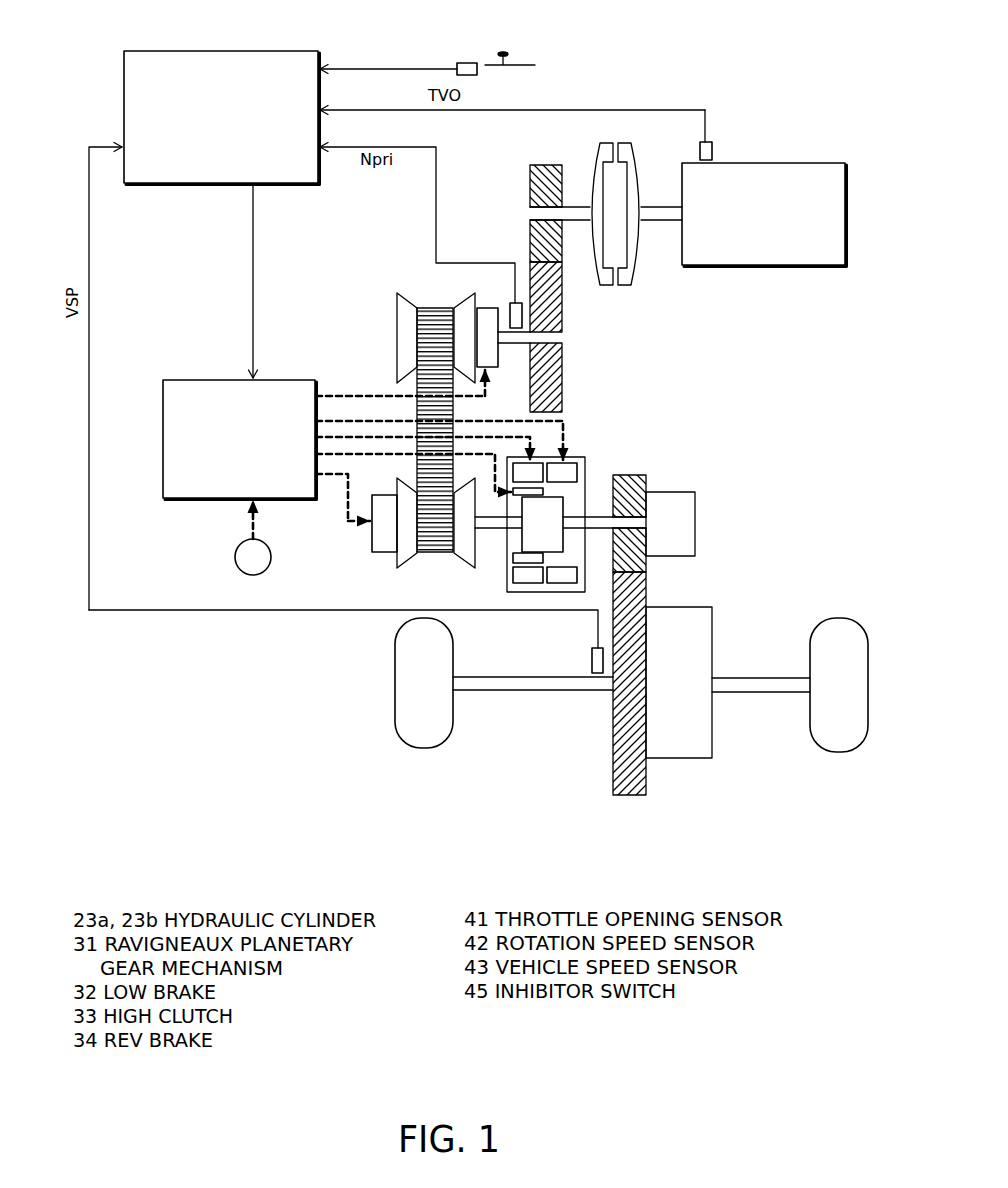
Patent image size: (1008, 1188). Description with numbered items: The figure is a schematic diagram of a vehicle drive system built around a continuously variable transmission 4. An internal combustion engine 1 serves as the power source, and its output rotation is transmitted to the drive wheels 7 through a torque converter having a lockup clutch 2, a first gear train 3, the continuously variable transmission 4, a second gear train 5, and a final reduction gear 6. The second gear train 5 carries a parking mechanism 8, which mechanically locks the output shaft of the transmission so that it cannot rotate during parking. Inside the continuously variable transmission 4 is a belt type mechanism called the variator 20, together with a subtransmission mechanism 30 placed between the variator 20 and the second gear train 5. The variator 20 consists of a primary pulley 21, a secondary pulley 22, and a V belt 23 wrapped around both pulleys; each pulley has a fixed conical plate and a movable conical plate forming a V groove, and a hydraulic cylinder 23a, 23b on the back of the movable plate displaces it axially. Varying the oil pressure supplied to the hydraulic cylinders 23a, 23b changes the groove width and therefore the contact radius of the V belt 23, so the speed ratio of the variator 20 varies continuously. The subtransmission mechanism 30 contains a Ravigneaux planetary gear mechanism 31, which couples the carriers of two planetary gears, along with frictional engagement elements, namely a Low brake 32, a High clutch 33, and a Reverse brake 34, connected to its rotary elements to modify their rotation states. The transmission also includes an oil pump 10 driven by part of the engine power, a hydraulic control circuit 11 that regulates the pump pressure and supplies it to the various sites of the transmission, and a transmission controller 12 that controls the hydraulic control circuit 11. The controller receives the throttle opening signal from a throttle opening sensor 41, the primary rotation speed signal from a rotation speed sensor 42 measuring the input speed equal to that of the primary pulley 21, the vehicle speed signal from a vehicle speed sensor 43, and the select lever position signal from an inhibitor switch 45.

The internal combustion engine 1 is at (830, 178).
The torque converter having a lockup clutch 2 is at (636, 156).
The first gear train 3 is at (547, 162).
The continuously variable transmission 4 is at (88, 90).
The second gear train 5 is at (630, 800).
The final reduction gear 6 is at (707, 785).
The drive wheels 7 is at (423, 750).
The parking mechanism 8 is at (696, 507).
The oil pump 10 is at (236, 547).
The hydraulic control circuit 11 is at (213, 382).
The transmission controller 12 is at (309, 51).
The variator 20 is at (390, 412).
The primary pulley 21 is at (408, 337).
The secondary pulley 22 is at (397, 558).
The V belt 23 is at (437, 308).
The hydraulic cylinder 23a is at (483, 308).
The hydraulic cylinder 23b is at (372, 522).
The subtransmission mechanism 30 is at (566, 486).
The Ravigneaux planetary gear mechanism 31 is at (560, 508).
The Low brake 32 is at (530, 467).
The High clutch 33 is at (513, 560).
The Reverse (Rev) brake 34 is at (570, 467).
The throttle opening sensor 41 is at (712, 146).
The rotation speed sensor 42 is at (514, 303).
The vehicle speed sensor 43 is at (592, 661).
The inhibitor switch 45 is at (472, 63).